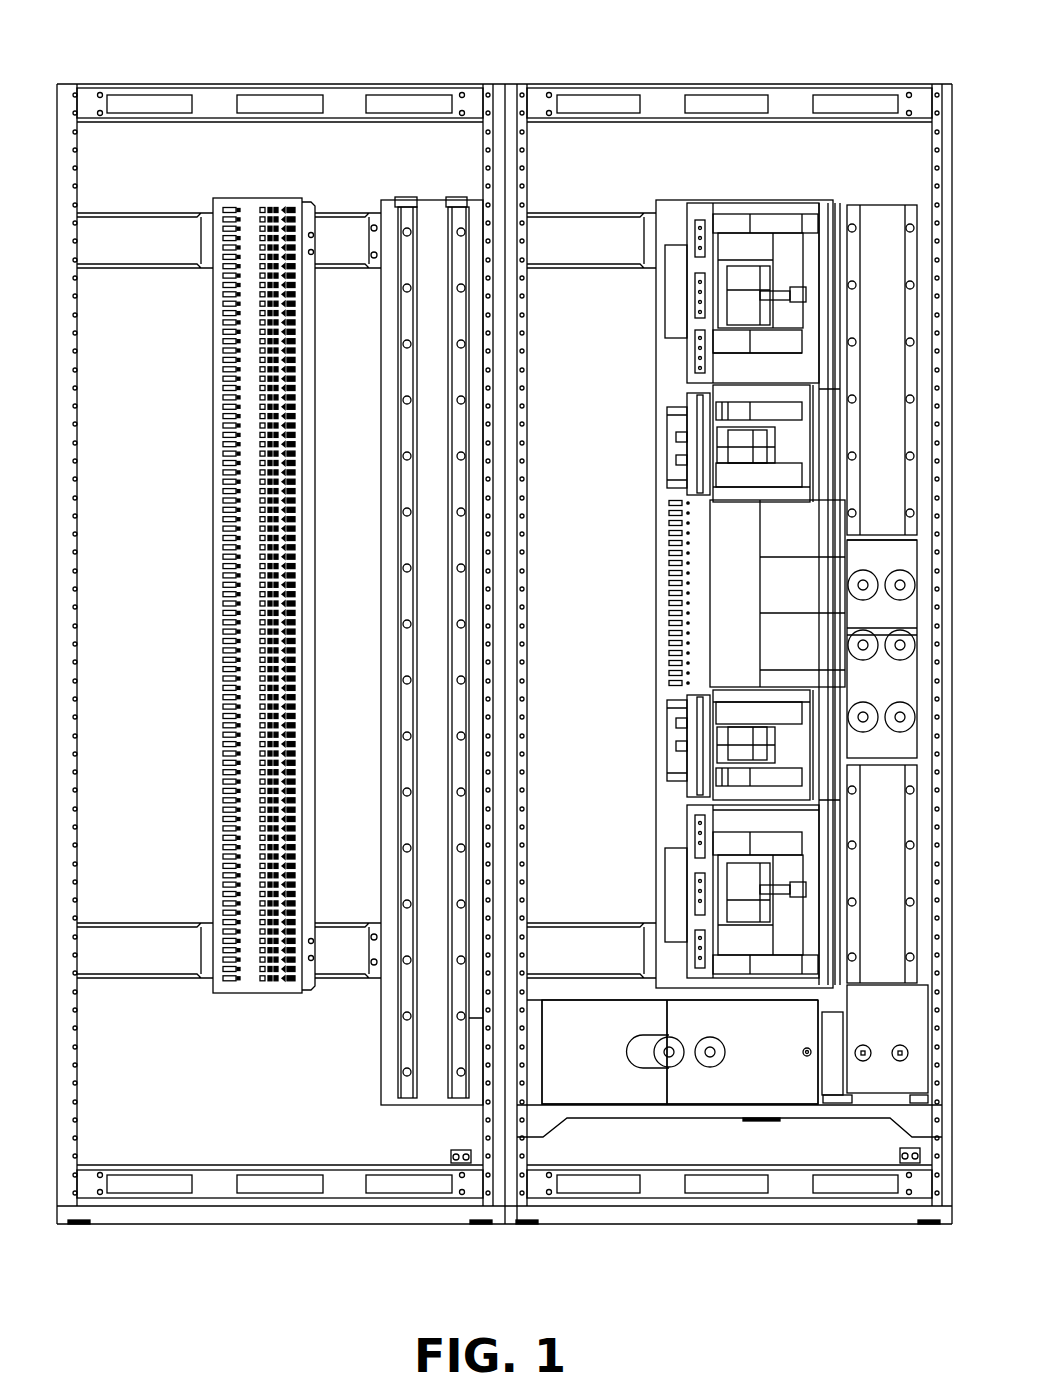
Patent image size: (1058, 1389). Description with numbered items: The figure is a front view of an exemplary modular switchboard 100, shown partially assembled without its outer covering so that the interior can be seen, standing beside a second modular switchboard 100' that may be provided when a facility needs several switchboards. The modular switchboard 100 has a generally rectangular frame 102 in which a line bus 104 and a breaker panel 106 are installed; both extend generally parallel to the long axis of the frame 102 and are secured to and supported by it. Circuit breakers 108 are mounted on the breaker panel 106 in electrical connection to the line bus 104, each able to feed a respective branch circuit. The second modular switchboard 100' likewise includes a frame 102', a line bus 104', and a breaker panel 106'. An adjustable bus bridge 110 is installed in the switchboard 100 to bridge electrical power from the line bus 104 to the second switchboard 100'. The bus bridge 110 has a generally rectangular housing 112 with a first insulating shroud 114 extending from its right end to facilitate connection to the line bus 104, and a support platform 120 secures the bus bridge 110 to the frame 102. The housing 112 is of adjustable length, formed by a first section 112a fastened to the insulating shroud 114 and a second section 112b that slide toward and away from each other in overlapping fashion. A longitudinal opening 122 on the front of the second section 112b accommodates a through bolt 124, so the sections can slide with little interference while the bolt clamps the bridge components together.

The modular switchboard 100 is at (708, 637).
The second modular switchboard 100' is at (503, 637).
The frame 102 is at (729, 71).
The frame 102' is at (280, 71).
The line bus 104 is at (868, 715).
The line bus 104' is at (401, 623).
The breaker panel 106 is at (701, 567).
The breaker panel 106' is at (224, 569).
The circuit breakers 108 is at (648, 430).
The bus bridge 110 is at (681, 1142).
The housing 112 is at (762, 1092).
The first section 112a is at (790, 1036).
The second section 112b is at (608, 1059).
The first insulating shroud 114 is at (825, 1075).
The support platform 120 is at (535, 1128).
The longitudinal opening 122 is at (647, 1075).
The through bolt 124 is at (710, 1068).